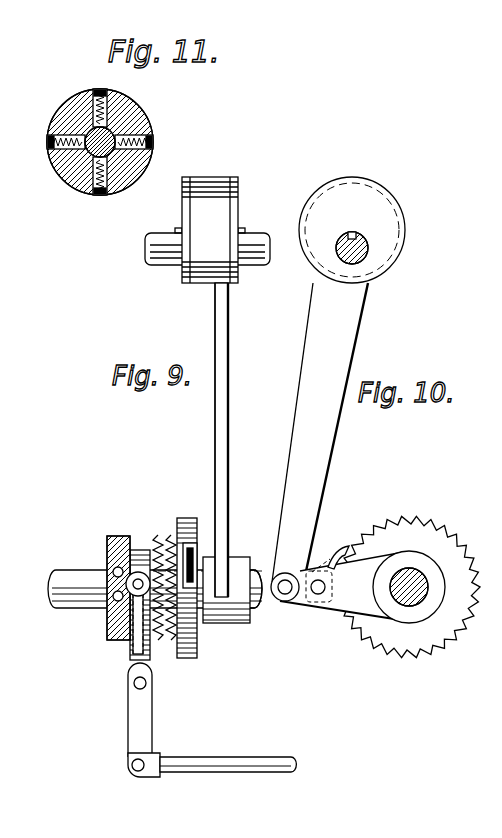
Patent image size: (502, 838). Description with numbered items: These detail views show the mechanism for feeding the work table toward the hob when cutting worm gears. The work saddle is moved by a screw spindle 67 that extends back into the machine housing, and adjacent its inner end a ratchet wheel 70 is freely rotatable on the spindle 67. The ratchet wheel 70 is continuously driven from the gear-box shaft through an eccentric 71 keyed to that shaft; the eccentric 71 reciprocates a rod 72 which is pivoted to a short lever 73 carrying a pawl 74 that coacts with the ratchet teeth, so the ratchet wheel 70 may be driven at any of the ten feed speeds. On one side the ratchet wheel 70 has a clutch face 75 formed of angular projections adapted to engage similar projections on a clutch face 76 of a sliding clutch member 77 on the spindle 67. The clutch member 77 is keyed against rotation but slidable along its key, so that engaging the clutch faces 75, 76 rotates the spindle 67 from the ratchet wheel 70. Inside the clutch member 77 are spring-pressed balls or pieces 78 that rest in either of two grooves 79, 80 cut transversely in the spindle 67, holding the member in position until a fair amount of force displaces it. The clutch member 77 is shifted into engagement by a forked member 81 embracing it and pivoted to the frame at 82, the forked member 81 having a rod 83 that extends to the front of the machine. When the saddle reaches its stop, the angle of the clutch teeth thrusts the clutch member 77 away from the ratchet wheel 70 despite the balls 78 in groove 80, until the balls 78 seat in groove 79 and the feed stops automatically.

In FIG. 11, the screw spindle 67 is at (71, 184).
In FIG. 9, the screw spindle 67 is at (74, 580).
In FIG. 10, the screw spindle 67 is at (413, 598).
In FIG. 9, the ratchet wheel 70 is at (187, 520).
In FIG. 10, the ratchet wheel 70 is at (428, 530).
In FIG. 10, the eccentric 71 is at (395, 206).
In FIG. 9, the rod 72 is at (228, 416).
In FIG. 10, the rod 72 is at (358, 328).
In FIG. 10, the short lever 73 is at (340, 603).
In FIG. 9, the pawl 74 is at (192, 552).
In FIG. 10, the pawl 74 is at (338, 553).
In FIG. 9, the clutch face 75 is at (171, 538).
In FIG. 9, the clutch face 76 is at (156, 540).
In FIG. 11, the sliding clutch member 77 is at (153, 157).
In FIG. 9, the sliding clutch member 77 is at (122, 618).
In FIG. 11, the spring-pressed balls or pieces 78 is at (84, 138).
In FIG. 11, the groove 79 is at (143, 126).
In FIG. 9, the groove 79 is at (107, 598).
In FIG. 9, the groove 80 is at (129, 662).
In FIG. 9, the forked member 81 is at (152, 718).
In FIG. 9, the pivot 82 is at (134, 690).
In FIG. 9, the rod 83 is at (262, 756).